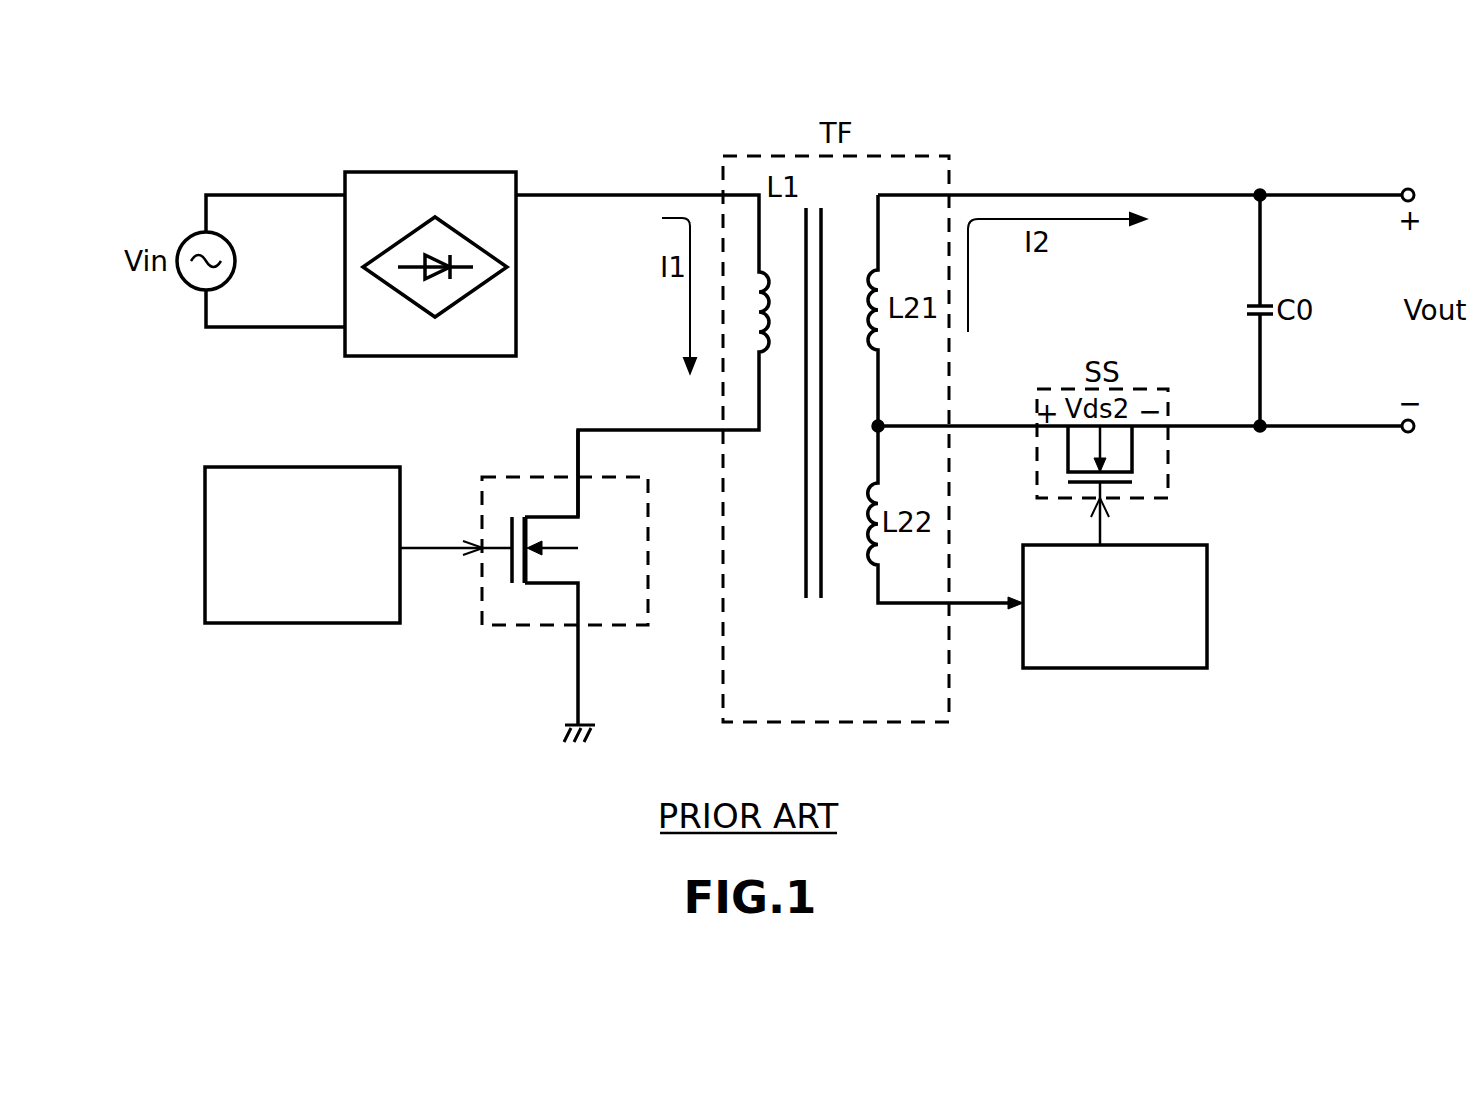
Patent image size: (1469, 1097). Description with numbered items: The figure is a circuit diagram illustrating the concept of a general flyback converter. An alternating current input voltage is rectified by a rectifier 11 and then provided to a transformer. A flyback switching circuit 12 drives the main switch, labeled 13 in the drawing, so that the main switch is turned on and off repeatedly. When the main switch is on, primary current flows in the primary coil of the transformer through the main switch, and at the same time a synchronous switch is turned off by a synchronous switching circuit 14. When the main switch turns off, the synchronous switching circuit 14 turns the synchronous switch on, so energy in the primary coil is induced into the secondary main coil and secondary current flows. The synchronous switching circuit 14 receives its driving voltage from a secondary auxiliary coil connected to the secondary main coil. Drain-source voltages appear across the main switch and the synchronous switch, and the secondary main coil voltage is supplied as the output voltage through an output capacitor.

The rectifier 11 is at (428, 182).
The flyback switching circuit 12 is at (300, 623).
The main switch MS 13 is at (515, 625).
The synchronous switching circuit 14 is at (1098, 668).